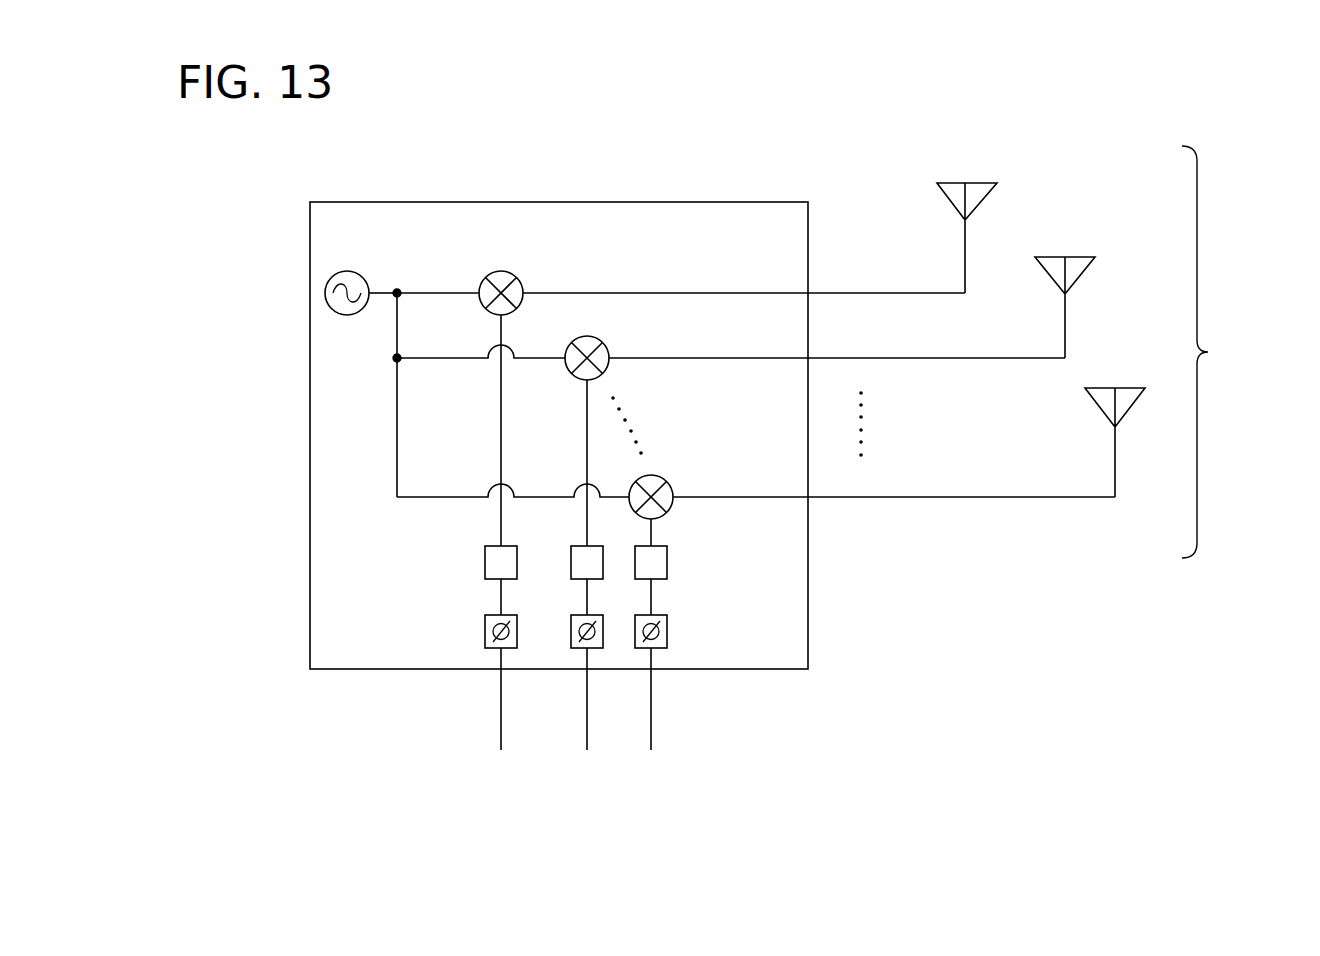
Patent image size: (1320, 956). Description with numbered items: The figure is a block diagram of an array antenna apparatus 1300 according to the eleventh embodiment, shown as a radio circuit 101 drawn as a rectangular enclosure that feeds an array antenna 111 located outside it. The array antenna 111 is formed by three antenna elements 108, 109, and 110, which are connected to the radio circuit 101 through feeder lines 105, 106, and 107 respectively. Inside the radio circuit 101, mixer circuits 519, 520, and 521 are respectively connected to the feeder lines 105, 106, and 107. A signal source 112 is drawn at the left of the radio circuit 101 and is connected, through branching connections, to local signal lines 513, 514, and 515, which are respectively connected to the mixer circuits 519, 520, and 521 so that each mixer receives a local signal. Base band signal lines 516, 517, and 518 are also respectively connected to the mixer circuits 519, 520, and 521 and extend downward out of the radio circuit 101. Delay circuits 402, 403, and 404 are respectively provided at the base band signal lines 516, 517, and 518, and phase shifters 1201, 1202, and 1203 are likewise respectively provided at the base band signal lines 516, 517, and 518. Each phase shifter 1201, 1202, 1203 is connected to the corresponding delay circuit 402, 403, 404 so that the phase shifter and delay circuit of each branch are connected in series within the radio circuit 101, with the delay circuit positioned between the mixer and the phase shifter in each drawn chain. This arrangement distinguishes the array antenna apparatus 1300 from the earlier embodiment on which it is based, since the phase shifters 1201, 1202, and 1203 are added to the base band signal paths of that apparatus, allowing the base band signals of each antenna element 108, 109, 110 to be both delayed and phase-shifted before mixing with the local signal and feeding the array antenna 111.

The radio circuit 101 is at (612, 202).
The signal source 112 is at (352, 270).
The local signal line 513 is at (427, 292).
The local signal line 514 is at (427, 357).
The local signal line 515 is at (427, 496).
The mixer circuit 519 is at (523, 283).
The mixer circuit 520 is at (609, 348).
The mixer circuit 521 is at (672, 487).
The delay circuit 402 is at (485, 562).
The delay circuit 403 is at (571, 561).
The delay circuit 404 is at (667, 562).
The phase shifter 1201 is at (485, 631).
The phase shifter 1202 is at (571, 631).
The phase shifter 1203 is at (667, 631).
The base band signal line 516 is at (501, 711).
The base band signal line 517 is at (587, 726).
The base band signal line 518 is at (651, 710).
The feeder line 105 is at (879, 291).
The feeder line 106 is at (921, 360).
The feeder line 107 is at (895, 499).
The antenna element 108 is at (975, 182).
The antenna element 109 is at (1075, 256).
The antenna element 110 is at (1125, 387).
The array antenna 111 is at (1222, 352).
The array antenna apparatus 1300 is at (867, 755).